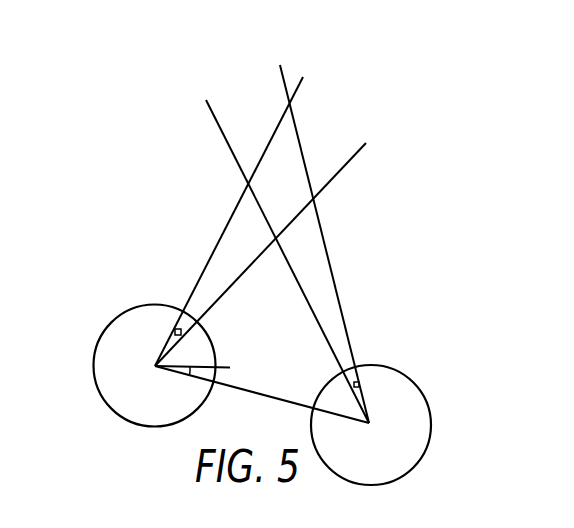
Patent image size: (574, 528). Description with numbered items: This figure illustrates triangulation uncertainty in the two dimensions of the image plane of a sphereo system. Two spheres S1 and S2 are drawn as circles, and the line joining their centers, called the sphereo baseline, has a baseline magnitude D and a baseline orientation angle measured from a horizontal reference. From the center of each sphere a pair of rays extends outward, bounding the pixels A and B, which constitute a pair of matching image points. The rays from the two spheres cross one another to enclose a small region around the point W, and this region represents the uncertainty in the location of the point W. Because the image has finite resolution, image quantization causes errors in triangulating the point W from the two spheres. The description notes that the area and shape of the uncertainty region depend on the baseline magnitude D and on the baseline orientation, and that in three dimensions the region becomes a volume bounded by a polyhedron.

The first sensor coverage circle S1 is at (155, 367).
The second sensor coverage circle S2 is at (371, 425).
The baseline magnitude D is at (262, 394).
The pixel A is at (256, 221).
The pixel B is at (291, 244).
The point W is at (287, 183).